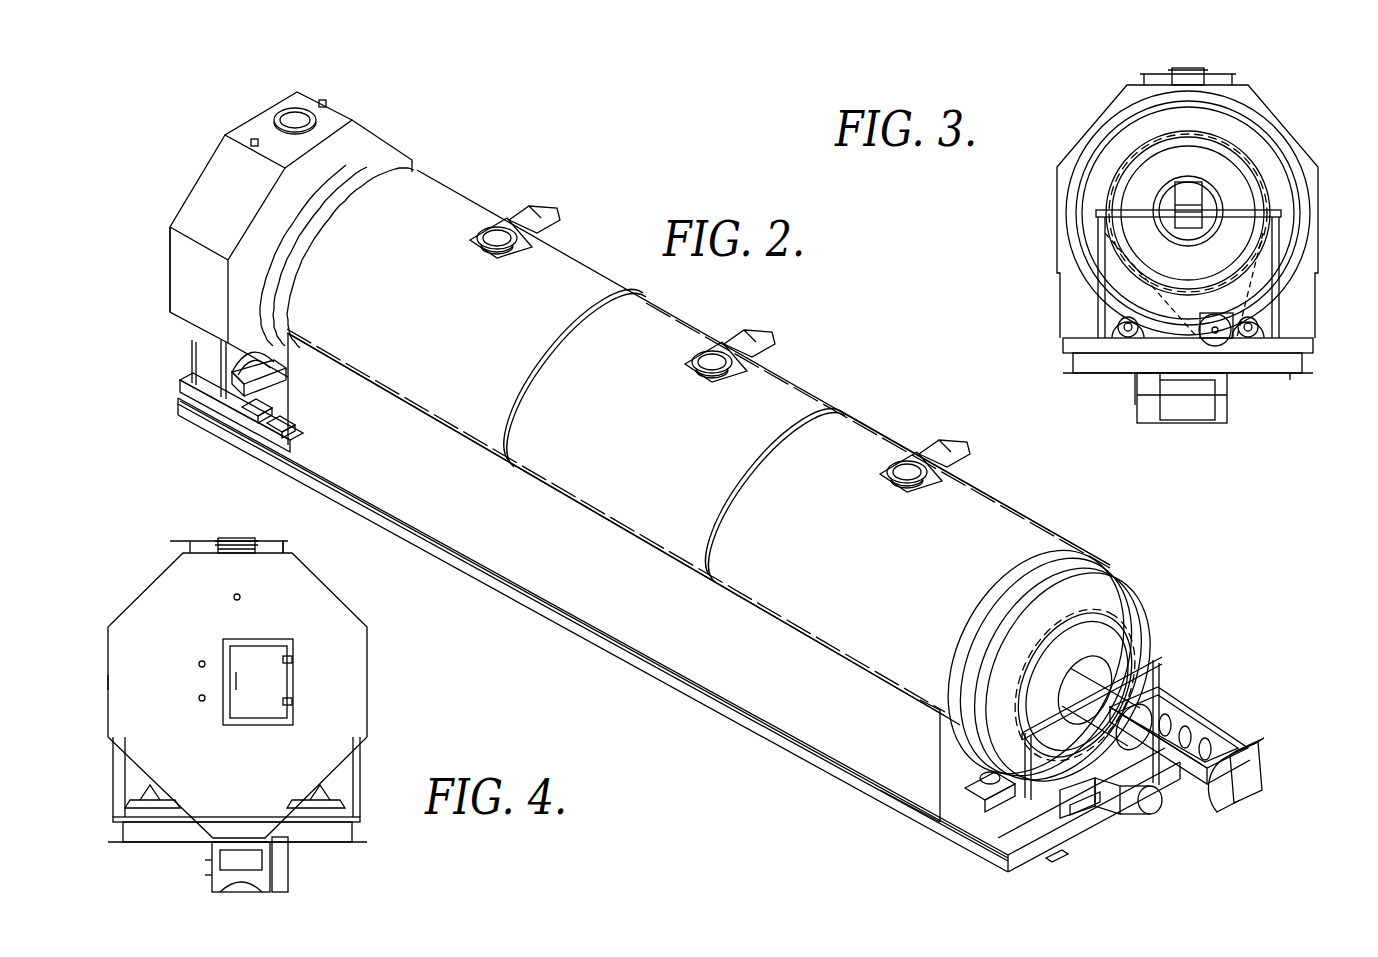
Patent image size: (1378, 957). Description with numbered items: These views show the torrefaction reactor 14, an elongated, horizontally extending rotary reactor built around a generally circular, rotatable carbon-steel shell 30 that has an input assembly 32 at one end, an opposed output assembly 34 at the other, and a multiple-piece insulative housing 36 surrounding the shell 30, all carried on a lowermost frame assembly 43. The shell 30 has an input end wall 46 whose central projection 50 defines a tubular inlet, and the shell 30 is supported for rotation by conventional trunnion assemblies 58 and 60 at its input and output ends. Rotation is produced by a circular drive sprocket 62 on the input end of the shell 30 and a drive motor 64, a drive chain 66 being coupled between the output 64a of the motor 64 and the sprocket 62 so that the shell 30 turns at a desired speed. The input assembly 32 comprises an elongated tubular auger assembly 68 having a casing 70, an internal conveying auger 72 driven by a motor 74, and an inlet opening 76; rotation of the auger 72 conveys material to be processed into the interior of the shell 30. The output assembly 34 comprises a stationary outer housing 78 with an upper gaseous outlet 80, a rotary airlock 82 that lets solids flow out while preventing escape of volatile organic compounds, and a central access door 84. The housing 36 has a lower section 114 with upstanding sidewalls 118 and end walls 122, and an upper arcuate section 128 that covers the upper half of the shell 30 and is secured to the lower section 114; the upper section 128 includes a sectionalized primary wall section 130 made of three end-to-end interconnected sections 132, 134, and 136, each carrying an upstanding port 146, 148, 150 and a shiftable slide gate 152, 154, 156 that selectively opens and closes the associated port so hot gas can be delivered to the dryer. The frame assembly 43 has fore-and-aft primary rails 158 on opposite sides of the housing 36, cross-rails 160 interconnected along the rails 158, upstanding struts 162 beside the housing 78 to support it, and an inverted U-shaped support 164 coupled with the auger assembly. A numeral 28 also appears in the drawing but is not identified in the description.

In FIG. 2, the torrefaction reactor 14 is at (848, 342).
In FIG. 3, the torrefaction reactor 14 is at (1080, 100).
In FIG. 4, the torrefaction reactor 14 is at (128, 558).
In FIG. 2, the drum 28 is at (337, 256).
In FIG. 2, the shell 30 is at (988, 612).
In FIG. 3, the shell 30 is at (1082, 180).
In FIG. 2, the input assembly 32 is at (1268, 664).
In FIG. 3, the input assembly 32 is at (1082, 229).
In FIG. 2, the output assembly 34 is at (185, 140).
In FIG. 4, the output assembly 34 is at (378, 692).
In FIG. 2, the insulative housing 36 is at (614, 220).
In FIG. 3, the insulative housing 36 is at (1058, 322).
In FIG. 2, the frame assembly 43 is at (758, 768).
In FIG. 3, the frame assembly 43 is at (1290, 380).
In FIG. 4, the frame assembly 43 is at (360, 852).
In FIG. 2, the input end wall 46 is at (1133, 616).
In FIG. 2, the central projection 50 is at (1098, 654).
In FIG. 2, the trunnion assembly 58 is at (968, 784).
In FIG. 3, the trunnion assembly 58 is at (1268, 312).
In FIG. 2, the trunnion assembly 60 is at (250, 444).
In FIG. 4, the trunnion assembly 60 is at (330, 794).
In FIG. 2, the drive sprocket 62 is at (1102, 605).
In FIG. 3, the drive sprocket 62 is at (1236, 140).
In FIG. 2, the drive motor 64 is at (1155, 815).
In FIG. 3, the drive motor 64 is at (1220, 345).
In FIG. 2, the output 64a is at (1082, 820).
In FIG. 2, the drive chain 66 is at (1077, 686).
In FIG. 3, the drive chain 66 is at (1256, 170).
In FIG. 2, the auger assembly 68 is at (1272, 738).
In FIG. 3, the auger assembly 68 is at (1242, 196).
In FIG. 2, the casing 70 is at (1200, 805).
In FIG. 2, the conveying auger 72 is at (1168, 706).
In FIG. 2, the motor 74 is at (1262, 770).
In FIG. 3, the motor 74 is at (1190, 226).
In FIG. 2, the inlet opening 76 is at (1213, 733).
In FIG. 2, the outer housing 78 is at (185, 212).
In FIG. 3, the outer housing 78 is at (1260, 92).
In FIG. 4, the outer housing 78 is at (318, 610).
In FIG. 2, the upper gaseous outlet 80 is at (290, 112).
In FIG. 4, the upper gaseous outlet 80 is at (262, 546).
In FIG. 2, the airlock 82 is at (282, 392).
In FIG. 3, the airlock 82 is at (1190, 423).
In FIG. 4, the airlock 82 is at (240, 892).
In FIG. 4, the central access door 84 is at (237, 656).
In FIG. 2, the lower section 114 is at (628, 670).
In FIG. 2, the sidewall 118 is at (498, 530).
In FIG. 2, the end wall 122 is at (948, 800).
In FIG. 2, the upper arcuate section 128 is at (1032, 504).
In FIG. 3, the upper arcuate section 128 is at (1076, 136).
In FIG. 2, the primary wall section 130 is at (1004, 484).
In FIG. 2, the section 132 is at (440, 182).
In FIG. 2, the section 134 is at (688, 326).
In FIG. 2, the section 136 is at (882, 440).
In FIG. 2, the port 146 is at (486, 226).
In FIG. 4, the port 146 is at (240, 538).
In FIG. 2, the port 148 is at (690, 360).
In FIG. 2, the port 150 is at (882, 466).
In FIG. 3, the port 150 is at (1160, 70).
In FIG. 2, the slide gate 152 is at (540, 212).
In FIG. 4, the slide gate 152 is at (182, 541).
In FIG. 2, the slide gate 154 is at (755, 340).
In FIG. 2, the slide gate 156 is at (942, 442).
In FIG. 3, the slide gate 156 is at (1246, 76).
In FIG. 2, the primary rails 158 is at (683, 712).
In FIG. 3, the primary rails 158 is at (1072, 364).
In FIG. 4, the primary rails 158 is at (118, 840).
In FIG. 2, the cross-rails 160 is at (1057, 860).
In FIG. 3, the cross-rails 160 is at (1102, 362).
In FIG. 4, the cross-rails 160 is at (322, 842).
In FIG. 2, the struts 162 is at (190, 354).
In FIG. 2, the inverted U-shaped support 164 is at (997, 862).
In FIG. 3, the inverted U-shaped support 164 is at (1098, 288).